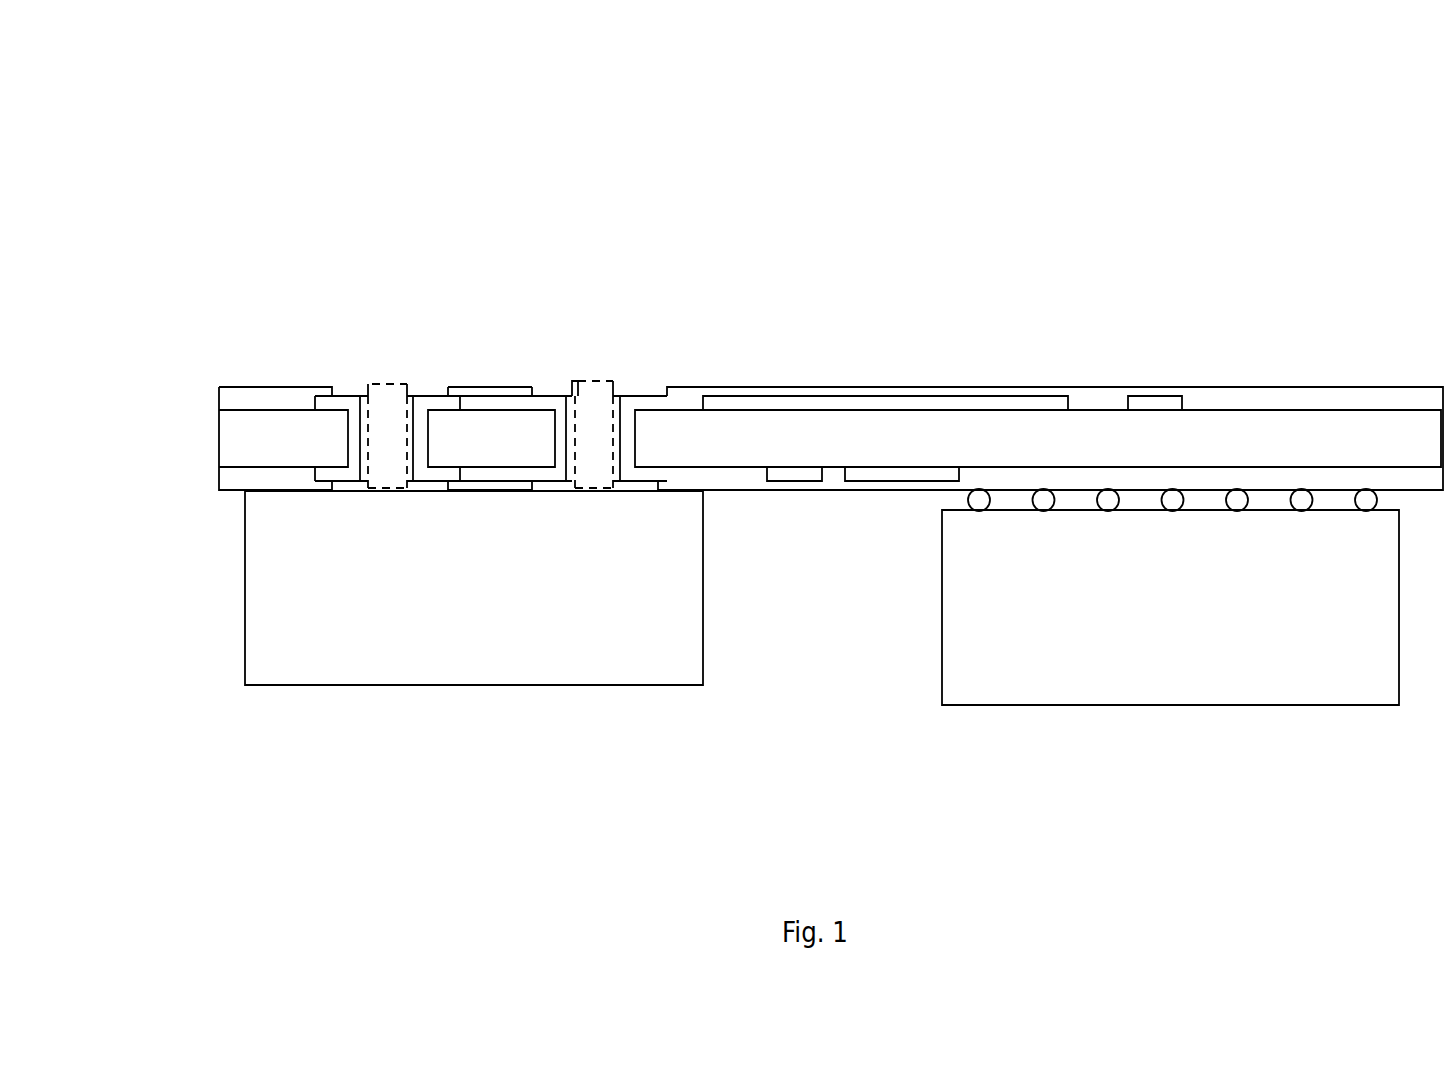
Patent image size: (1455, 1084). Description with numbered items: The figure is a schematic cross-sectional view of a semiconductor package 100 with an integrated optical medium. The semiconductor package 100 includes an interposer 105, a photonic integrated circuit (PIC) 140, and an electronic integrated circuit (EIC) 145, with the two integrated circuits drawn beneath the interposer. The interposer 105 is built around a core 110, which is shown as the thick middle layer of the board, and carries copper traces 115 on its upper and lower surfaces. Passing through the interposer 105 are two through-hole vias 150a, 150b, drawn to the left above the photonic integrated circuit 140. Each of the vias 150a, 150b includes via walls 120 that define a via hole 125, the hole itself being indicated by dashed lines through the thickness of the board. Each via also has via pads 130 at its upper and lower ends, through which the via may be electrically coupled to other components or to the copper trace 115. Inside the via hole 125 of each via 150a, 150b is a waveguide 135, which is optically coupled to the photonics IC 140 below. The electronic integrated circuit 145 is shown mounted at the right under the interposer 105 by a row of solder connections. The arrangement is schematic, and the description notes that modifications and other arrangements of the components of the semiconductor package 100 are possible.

The semiconductor package 100 is at (1282, 910).
The interposer 105 is at (212, 506).
The core 110 is at (1093, 445).
The copper trace 115 is at (945, 407).
The via wall 120 is at (627, 433).
The via hole 125 is at (617, 430).
The via pad 130 is at (553, 396).
The waveguide 135 is at (626, 360).
The photonic integrated circuit 140 is at (604, 602).
The electronic integrated circuit 145 is at (1308, 621).
The via 150a is at (746, 265).
The via 150b is at (415, 360).